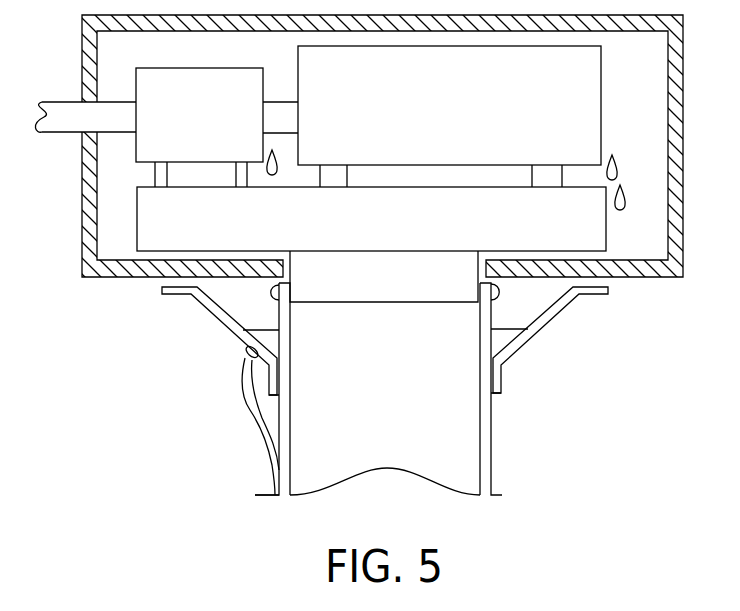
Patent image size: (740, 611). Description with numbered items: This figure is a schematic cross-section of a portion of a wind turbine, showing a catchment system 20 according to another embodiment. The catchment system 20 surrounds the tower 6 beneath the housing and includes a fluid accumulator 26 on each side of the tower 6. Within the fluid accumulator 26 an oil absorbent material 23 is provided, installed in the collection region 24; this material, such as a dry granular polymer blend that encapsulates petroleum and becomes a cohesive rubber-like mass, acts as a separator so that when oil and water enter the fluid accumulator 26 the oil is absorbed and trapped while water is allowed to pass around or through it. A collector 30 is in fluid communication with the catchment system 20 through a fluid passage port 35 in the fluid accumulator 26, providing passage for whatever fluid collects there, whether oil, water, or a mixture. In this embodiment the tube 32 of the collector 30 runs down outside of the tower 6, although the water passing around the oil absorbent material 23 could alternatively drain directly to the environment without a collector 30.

The tower 6 is at (492, 442).
The catchment system 20 is at (385, 358).
The oil absorbent material 23 is at (267, 338).
The collection region 24 is at (281, 357).
The fluid accumulator 26 is at (196, 306).
The collector 30 is at (260, 430).
The tube 32 is at (270, 483).
The fluid passage port 35 is at (246, 352).